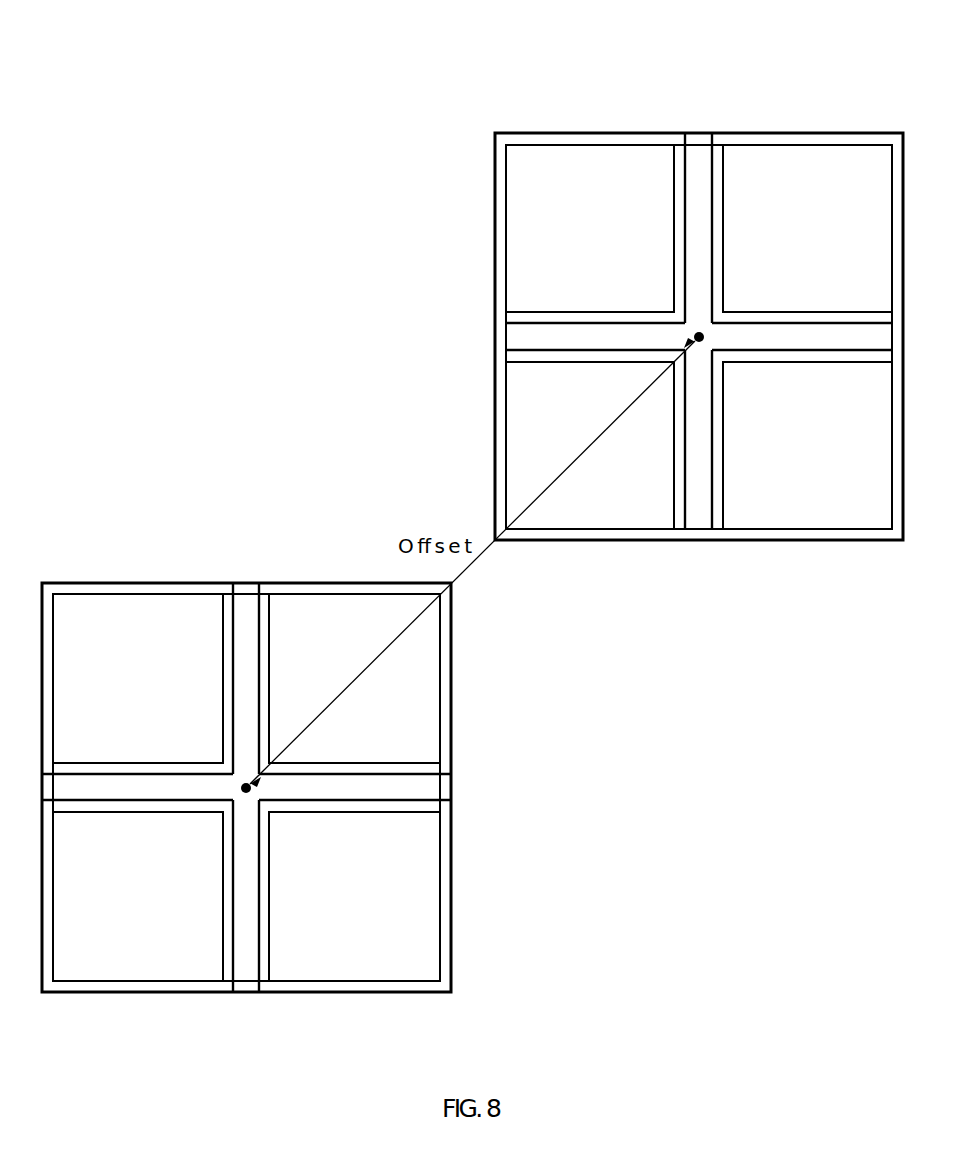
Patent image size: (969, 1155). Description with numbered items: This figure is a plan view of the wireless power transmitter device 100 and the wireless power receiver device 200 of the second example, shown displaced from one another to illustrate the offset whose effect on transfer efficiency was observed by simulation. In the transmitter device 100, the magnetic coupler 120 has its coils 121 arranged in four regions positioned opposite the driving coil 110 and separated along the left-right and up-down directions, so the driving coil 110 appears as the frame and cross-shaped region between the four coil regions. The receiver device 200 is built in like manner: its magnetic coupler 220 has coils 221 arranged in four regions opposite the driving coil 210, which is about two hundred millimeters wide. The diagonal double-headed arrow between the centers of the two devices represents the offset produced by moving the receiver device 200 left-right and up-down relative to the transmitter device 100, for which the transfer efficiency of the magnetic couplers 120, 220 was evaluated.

The wireless power transmitter device 100 is at (353, 489).
The driving coil 110 is at (246, 583).
The magnetic coupler 120 is at (310, 582).
The coils 121 is at (140, 583).
The wireless power receiver device 200 is at (806, 42).
The driving coil 210 is at (592, 133).
The magnetic coupler 220 is at (750, 130).
The coils 221 is at (683, 150).